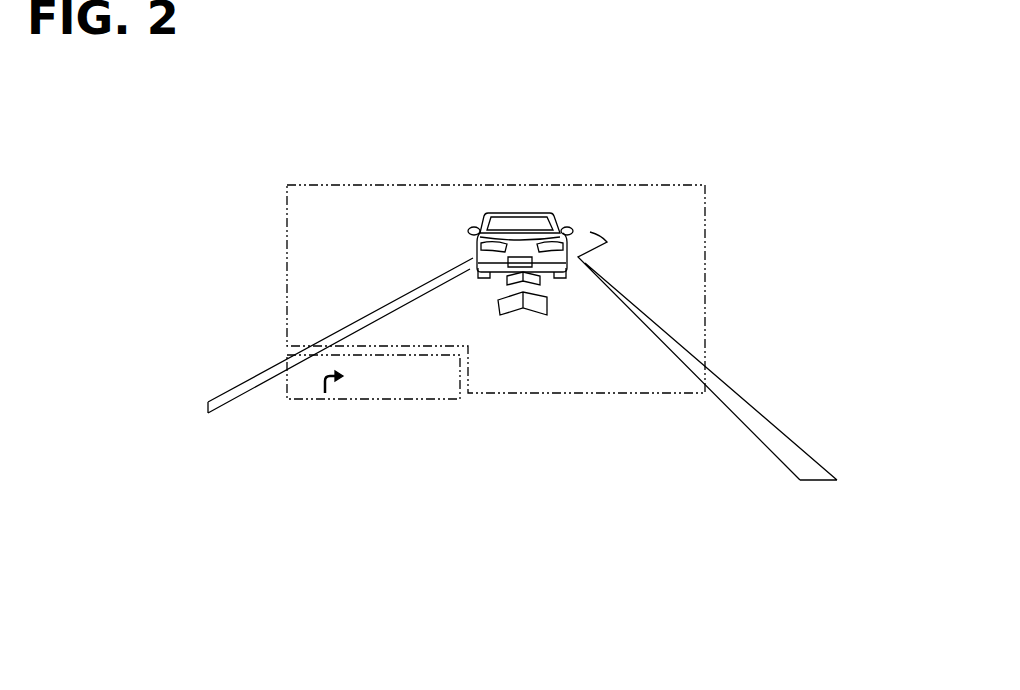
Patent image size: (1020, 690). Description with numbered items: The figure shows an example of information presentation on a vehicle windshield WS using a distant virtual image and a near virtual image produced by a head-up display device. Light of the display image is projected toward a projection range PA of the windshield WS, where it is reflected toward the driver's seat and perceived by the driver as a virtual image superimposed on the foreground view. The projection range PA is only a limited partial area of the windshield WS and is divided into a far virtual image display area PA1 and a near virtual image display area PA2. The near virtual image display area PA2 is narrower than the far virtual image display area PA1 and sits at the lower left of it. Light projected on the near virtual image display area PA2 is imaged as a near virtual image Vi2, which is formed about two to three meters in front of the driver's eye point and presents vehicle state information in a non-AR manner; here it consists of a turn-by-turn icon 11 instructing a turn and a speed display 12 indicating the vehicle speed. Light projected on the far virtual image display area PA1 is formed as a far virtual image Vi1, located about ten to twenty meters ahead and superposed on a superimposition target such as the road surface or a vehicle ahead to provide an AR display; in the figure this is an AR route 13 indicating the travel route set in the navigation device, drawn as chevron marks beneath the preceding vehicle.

The windshield WS is at (232, 190).
The AR route 13 is at (556, 297).
The far virtual image Vi1 is at (629, 371).
The near virtual image Vi2 is at (305, 423).
The turn-by-turn icon 11 is at (323, 396).
The speed display 12 is at (388, 408).
The projection range PA is at (402, 438).
The far virtual image display area PA1 is at (497, 403).
The near virtual image display area PA2 is at (373, 412).